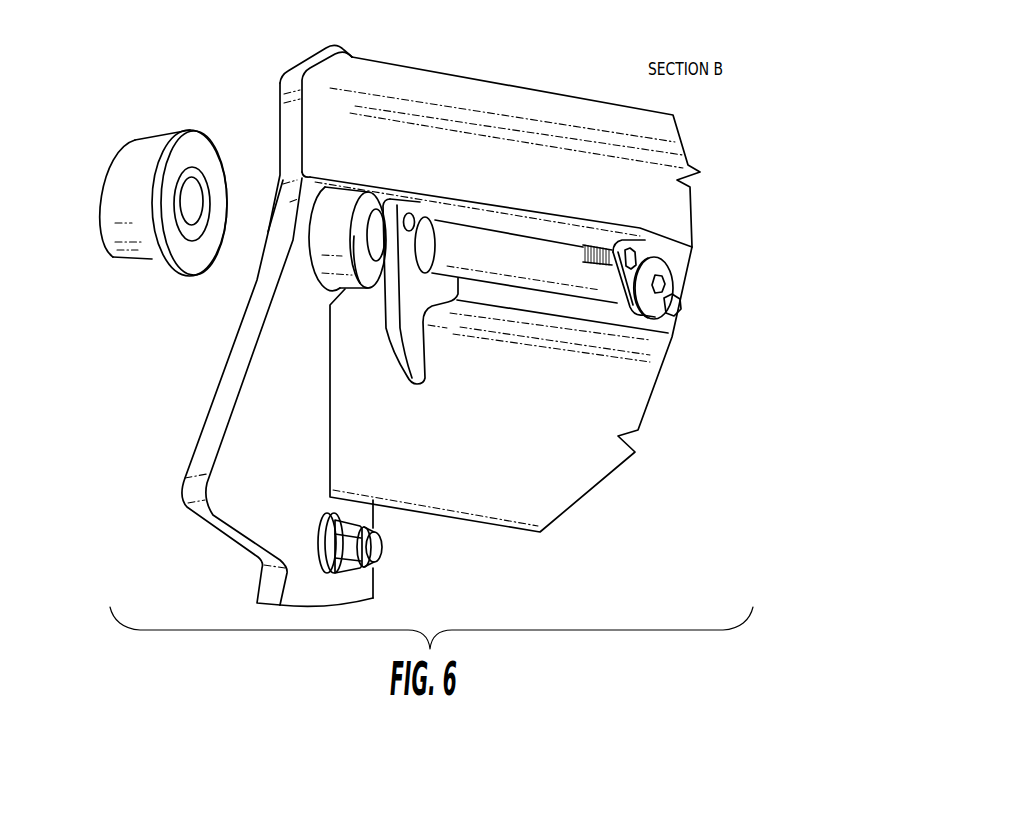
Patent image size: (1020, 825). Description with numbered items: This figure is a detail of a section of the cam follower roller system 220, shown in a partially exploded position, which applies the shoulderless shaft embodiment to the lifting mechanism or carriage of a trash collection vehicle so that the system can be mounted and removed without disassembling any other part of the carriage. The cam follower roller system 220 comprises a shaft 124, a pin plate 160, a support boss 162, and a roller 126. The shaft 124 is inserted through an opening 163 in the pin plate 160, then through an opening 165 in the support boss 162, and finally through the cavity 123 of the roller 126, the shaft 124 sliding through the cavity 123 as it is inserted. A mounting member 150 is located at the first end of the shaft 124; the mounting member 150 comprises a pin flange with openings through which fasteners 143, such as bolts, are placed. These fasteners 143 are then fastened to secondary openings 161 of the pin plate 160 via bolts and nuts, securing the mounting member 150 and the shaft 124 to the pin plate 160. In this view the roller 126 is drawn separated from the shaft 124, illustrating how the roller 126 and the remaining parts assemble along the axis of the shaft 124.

The cam follower roller system 220 is at (232, 92).
The roller 126 is at (130, 212).
The cavity 123 is at (190, 207).
The shaft 124 is at (520, 252).
The support boss 162 is at (330, 263).
The opening 165 is at (377, 230).
The pin plate 160 is at (418, 346).
The secondary openings 161 is at (406, 227).
The opening 163 is at (453, 217).
The fastener 143 is at (645, 255).
The mounting member 150 is at (652, 313).